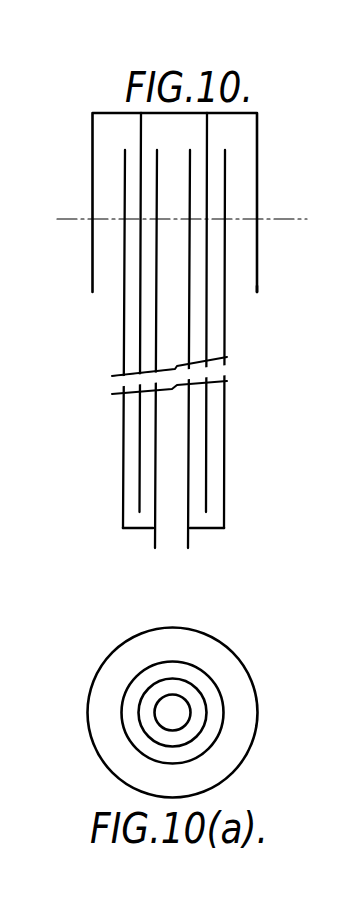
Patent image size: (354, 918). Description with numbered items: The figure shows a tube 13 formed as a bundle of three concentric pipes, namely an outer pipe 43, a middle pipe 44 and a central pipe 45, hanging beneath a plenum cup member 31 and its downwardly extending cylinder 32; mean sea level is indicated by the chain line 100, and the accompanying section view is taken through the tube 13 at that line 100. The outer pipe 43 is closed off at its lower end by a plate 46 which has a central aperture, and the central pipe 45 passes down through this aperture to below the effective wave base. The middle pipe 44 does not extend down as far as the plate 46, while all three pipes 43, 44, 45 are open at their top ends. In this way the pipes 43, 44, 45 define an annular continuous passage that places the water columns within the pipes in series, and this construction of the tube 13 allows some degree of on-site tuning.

In FIG. 10, the tube 13 is at (230, 423).
In FIG. 10A, the tube 13 is at (212, 668).
In FIG. 10, the plenum cup member 31 is at (239, 139).
In FIG. 10A, the plenum cup member 31 is at (247, 758).
In FIG. 10, the downwardly extending cylinder 32 is at (257, 275).
In FIG. 10, the outer pipe 43 is at (213, 460).
In FIG. 10A, the outer pipe 43 is at (208, 692).
In FIG. 10, the middle pipe 44 is at (195, 497).
In FIG. 10A, the middle pipe 44 is at (197, 710).
In FIG. 10, the central pipe 45 is at (167, 528).
In FIG. 10A, the central pipe 45 is at (175, 715).
In FIG. 10, the plate 46 is at (208, 535).
In FIG. 10, the chain line 100 is at (66, 203).